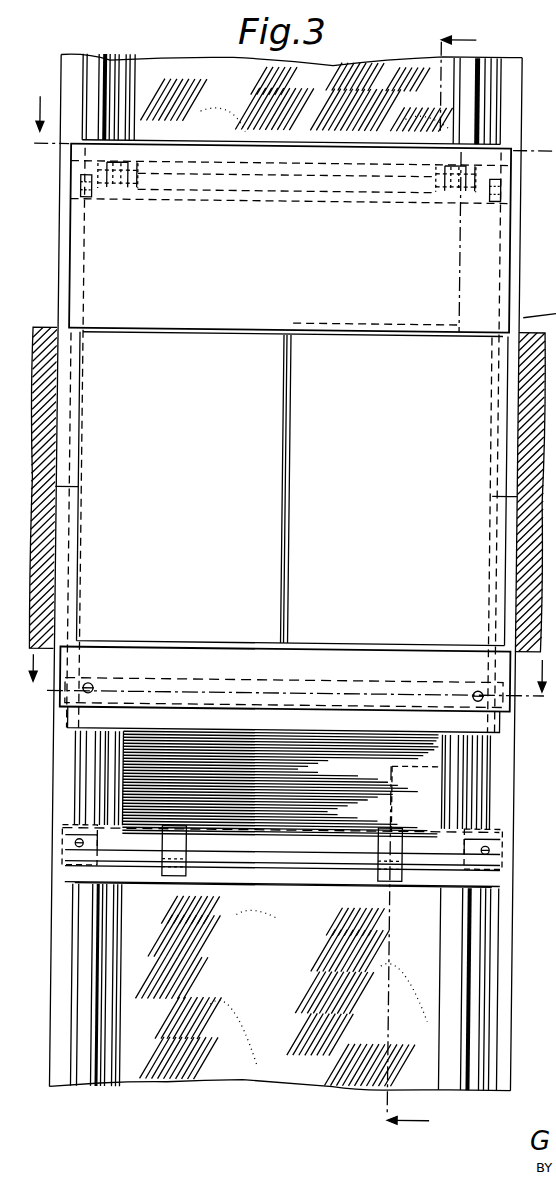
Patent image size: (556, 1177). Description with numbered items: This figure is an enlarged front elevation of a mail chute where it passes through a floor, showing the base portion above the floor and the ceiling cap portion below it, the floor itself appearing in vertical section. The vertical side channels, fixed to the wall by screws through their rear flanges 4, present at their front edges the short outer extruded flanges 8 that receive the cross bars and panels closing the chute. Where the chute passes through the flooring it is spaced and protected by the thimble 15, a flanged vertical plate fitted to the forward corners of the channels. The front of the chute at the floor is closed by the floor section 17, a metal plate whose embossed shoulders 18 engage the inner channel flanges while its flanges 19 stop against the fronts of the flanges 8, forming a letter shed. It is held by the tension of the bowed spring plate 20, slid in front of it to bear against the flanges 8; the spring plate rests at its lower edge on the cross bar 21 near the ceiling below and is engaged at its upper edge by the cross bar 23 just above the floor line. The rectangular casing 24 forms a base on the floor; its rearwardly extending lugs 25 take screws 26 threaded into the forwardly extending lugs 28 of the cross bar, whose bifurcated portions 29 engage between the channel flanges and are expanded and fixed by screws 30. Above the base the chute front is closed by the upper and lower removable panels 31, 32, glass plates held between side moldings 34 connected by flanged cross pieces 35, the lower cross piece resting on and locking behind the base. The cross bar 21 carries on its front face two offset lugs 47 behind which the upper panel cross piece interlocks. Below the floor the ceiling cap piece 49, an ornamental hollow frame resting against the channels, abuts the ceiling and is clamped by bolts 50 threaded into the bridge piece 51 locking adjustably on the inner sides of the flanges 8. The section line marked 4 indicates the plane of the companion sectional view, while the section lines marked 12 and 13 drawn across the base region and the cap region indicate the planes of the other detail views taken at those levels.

The rear flange 4 is at (425, 586).
The outer extruded flange 8 is at (63, 82).
The top rail 12 is at (270, 414).
The bottom rail 13 is at (287, 689).
The thimble 15 is at (52, 311).
The floor section 17 is at (283, 761).
The shoulder 18 is at (465, 752).
The flange 19 is at (87, 755).
The bowed spring plate 20 is at (287, 532).
The cross bar 21 is at (336, 867).
The cross bar 23 is at (363, 201).
The rectangular casing 24 is at (294, 237).
The rearwardly extending lug 25 is at (137, 171).
The screw 26 is at (120, 166).
The forwardly extending lug 28 is at (134, 194).
The bifurcated portion 29 is at (70, 189).
The screw 30 is at (84, 194).
The upper panel 31 is at (282, 990).
The lower panel 32 is at (296, 97).
The molding 34 is at (114, 127).
The flanged cross piece 35 is at (246, 148).
The offset lug 47 is at (190, 887).
The ceiling cap piece 49 is at (371, 701).
The bolt 50 is at (93, 689).
The bridge piece 51 is at (254, 680).